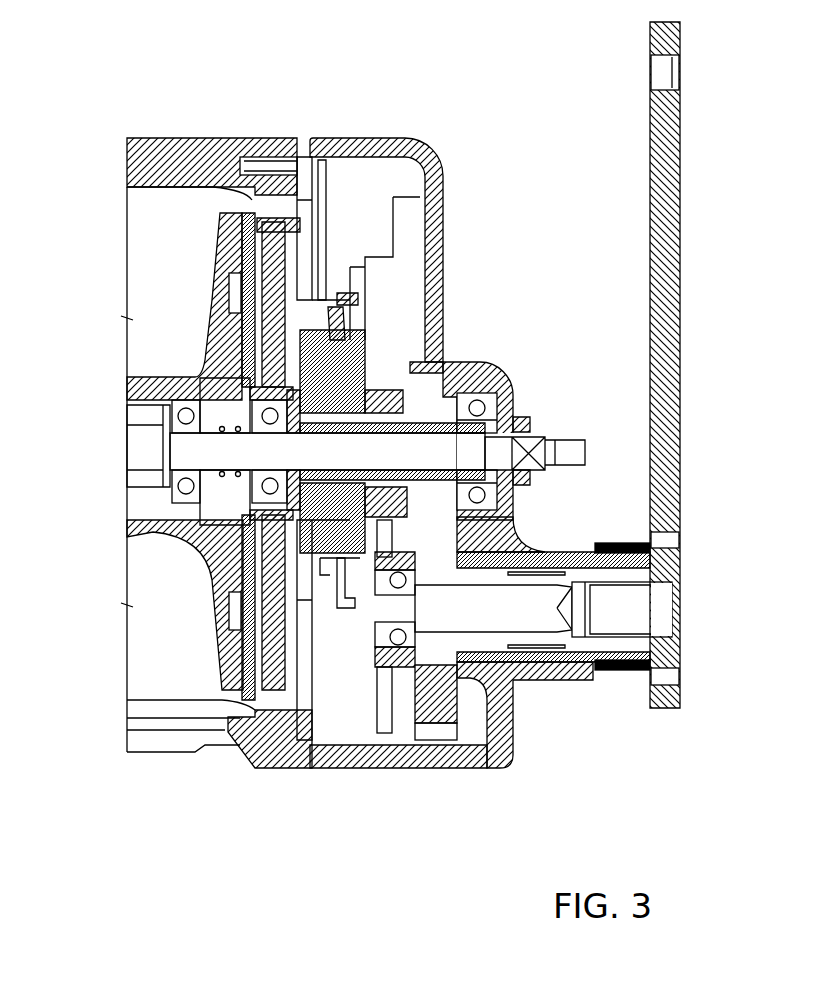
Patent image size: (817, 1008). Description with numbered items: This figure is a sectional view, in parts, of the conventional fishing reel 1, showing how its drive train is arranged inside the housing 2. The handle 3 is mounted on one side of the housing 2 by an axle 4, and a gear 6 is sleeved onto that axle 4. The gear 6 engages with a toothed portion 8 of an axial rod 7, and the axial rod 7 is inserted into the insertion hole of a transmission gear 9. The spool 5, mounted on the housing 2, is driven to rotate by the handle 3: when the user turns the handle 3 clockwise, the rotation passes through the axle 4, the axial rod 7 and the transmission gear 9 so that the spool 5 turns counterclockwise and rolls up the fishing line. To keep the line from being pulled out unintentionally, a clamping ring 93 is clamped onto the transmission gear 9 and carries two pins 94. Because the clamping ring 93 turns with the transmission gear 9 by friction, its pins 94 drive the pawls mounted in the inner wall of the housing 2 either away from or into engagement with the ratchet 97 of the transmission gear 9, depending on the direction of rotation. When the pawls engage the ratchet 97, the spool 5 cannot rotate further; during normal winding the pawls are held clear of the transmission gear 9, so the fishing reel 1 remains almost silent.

The fishing reel 1 is at (460, 128).
The housing 2 is at (173, 140).
The handle 3 is at (680, 240).
The axle 4 is at (540, 640).
The spool 5 is at (160, 540).
The gear 6 is at (455, 715).
The axial rod 7 is at (407, 420).
The toothed portion 8 is at (450, 362).
The transmission gear 9 is at (365, 355).
The clamping ring 93 is at (330, 300).
The pins 94 is at (357, 298).
The ratchet 97 is at (355, 563).